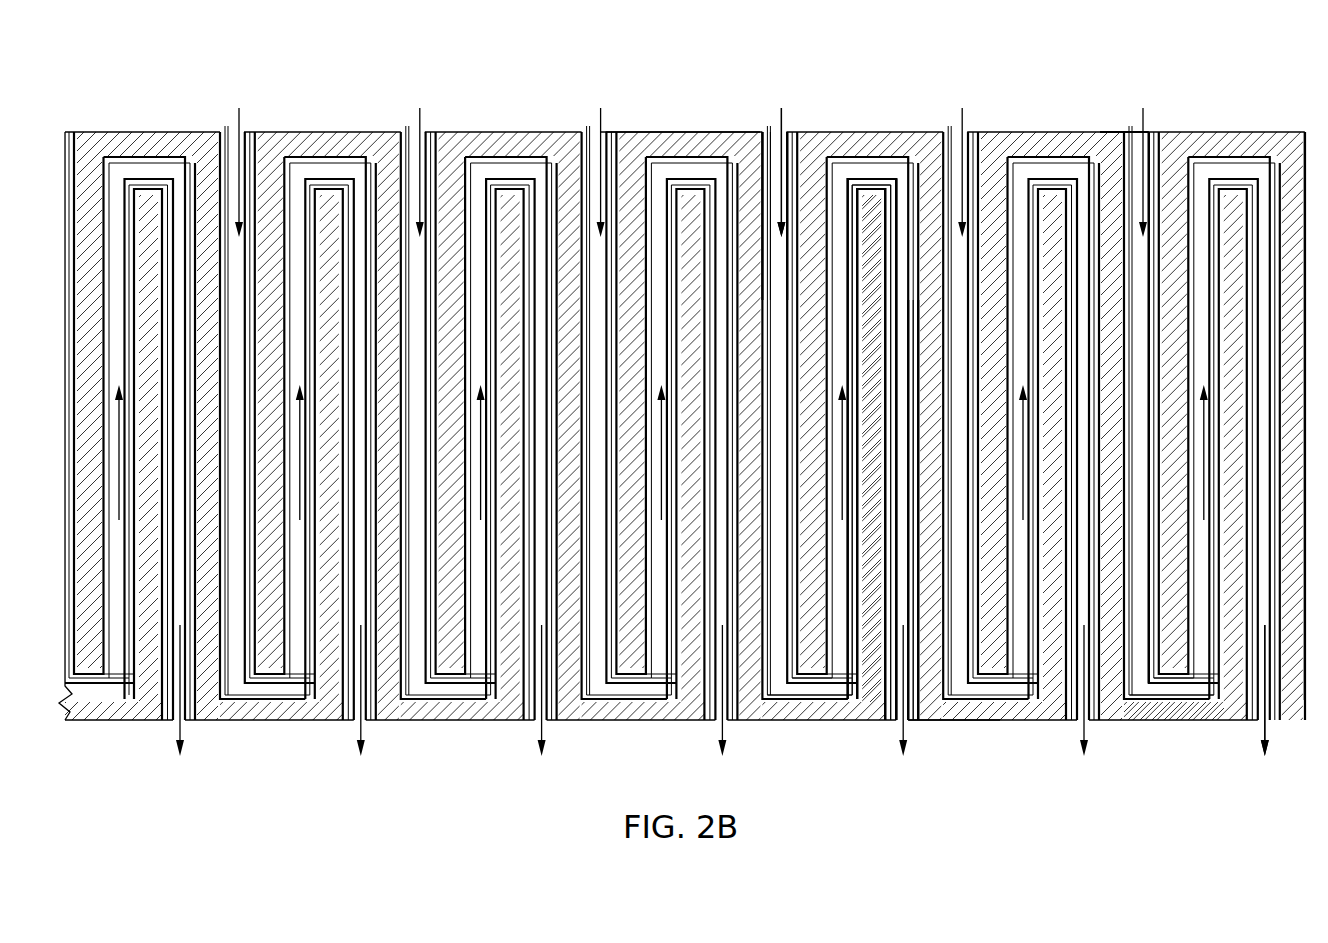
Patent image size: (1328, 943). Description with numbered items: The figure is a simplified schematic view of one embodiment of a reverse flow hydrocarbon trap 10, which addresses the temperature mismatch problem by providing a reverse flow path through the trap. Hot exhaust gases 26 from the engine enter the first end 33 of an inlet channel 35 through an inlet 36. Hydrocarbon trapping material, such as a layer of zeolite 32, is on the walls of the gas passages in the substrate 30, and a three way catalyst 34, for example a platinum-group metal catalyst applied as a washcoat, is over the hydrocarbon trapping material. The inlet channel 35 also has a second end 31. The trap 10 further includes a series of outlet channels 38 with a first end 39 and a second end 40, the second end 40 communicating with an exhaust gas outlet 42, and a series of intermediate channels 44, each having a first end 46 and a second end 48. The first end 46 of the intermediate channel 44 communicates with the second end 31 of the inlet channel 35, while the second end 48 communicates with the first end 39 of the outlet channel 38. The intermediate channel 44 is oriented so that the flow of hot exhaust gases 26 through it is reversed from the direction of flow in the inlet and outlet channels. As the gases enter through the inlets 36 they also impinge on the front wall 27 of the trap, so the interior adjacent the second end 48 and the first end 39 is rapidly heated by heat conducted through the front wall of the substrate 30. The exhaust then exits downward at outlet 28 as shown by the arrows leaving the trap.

The trap 10 is at (503, 106).
The hot exhaust gases 26 is at (1148, 130).
The front wall 27 is at (692, 130).
The outlet 28 is at (1272, 745).
The substrate 30 is at (1222, 710).
The second end 31 is at (780, 690).
The zeolite 32 is at (1190, 690).
The first end 33 is at (777, 134).
The three way catalyst 34 is at (1152, 690).
The inlet channel 35 is at (783, 240).
The inlet 36 is at (788, 125).
The outlet channel 38 is at (905, 222).
The first end 39 is at (898, 180).
The second end 40 is at (907, 615).
The exhaust gas outlet 42 is at (899, 727).
The intermediate channel 44 is at (850, 205).
The first end 46 is at (845, 690).
The second end 48 is at (846, 178).